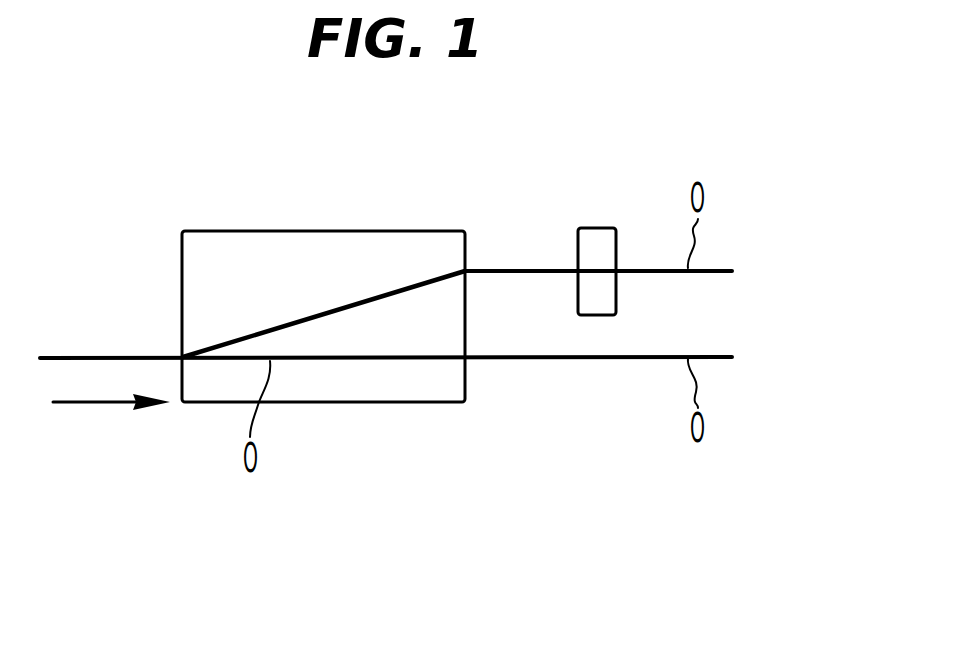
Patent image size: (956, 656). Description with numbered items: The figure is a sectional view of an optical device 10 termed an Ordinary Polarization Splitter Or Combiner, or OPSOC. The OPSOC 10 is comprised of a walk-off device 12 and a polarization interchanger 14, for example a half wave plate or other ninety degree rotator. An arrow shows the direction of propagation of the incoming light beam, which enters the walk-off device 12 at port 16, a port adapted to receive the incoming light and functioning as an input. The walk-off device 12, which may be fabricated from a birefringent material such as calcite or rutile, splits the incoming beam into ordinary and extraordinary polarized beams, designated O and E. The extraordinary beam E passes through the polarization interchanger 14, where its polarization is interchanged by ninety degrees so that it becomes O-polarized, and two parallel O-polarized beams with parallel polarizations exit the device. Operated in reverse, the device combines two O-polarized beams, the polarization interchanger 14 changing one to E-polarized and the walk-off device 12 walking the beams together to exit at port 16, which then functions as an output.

The optical device (OPSOC) 10 is at (545, 425).
The walk-off device 12 is at (420, 403).
The polarization interchanger 14 is at (593, 228).
The port 16 is at (183, 358).
The extraordinary polarized beam E is at (342, 306).